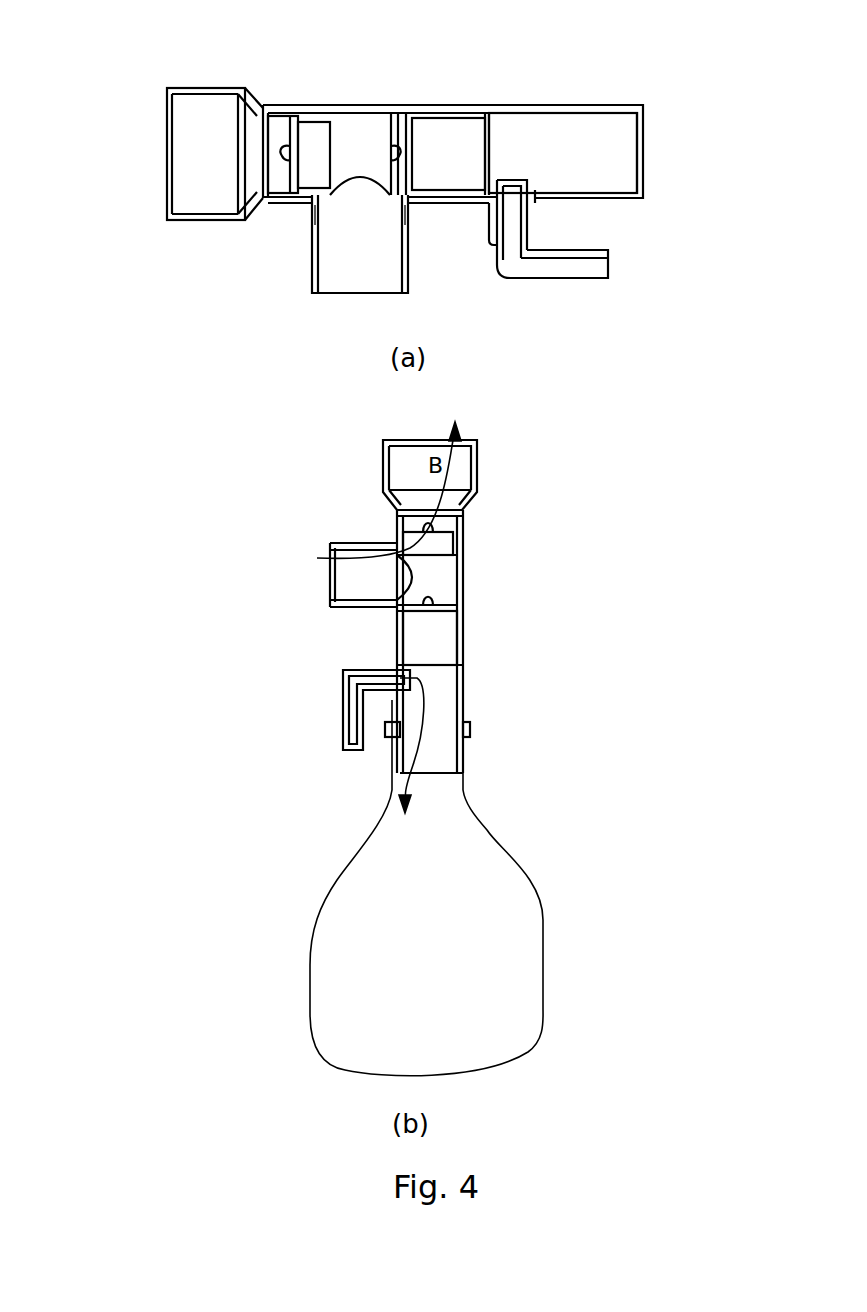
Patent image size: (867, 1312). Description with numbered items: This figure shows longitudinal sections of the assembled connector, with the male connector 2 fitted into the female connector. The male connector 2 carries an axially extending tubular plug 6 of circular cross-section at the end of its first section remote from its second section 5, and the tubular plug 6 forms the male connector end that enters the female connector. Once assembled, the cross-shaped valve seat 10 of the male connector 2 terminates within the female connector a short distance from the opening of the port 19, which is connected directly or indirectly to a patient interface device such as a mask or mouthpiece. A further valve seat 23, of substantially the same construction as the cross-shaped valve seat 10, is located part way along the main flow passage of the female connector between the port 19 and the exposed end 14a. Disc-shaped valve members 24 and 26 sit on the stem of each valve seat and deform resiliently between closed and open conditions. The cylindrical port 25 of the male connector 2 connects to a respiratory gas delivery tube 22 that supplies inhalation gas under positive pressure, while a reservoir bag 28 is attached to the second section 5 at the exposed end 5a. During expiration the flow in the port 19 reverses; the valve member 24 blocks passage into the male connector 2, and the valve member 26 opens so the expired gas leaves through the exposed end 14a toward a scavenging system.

The exposed end of the female connector portion 14a is at (166, 160).
The valve seat 23 is at (317, 120).
The valve member 24 is at (402, 133).
The cross-shaped valve seat 10 is at (412, 133).
The second section 5 is at (593, 110).
The exposed end of the male connector 5a is at (643, 148).
The male connector 2 is at (645, 198).
The cylindrical port 25 is at (538, 218).
The respiratory gas delivery tube 22 is at (573, 270).
The port 19 is at (413, 288).
The tubular plug 6 is at (453, 203).
The valve member 26 is at (293, 180).
The reservoir bag 28 is at (337, 880).